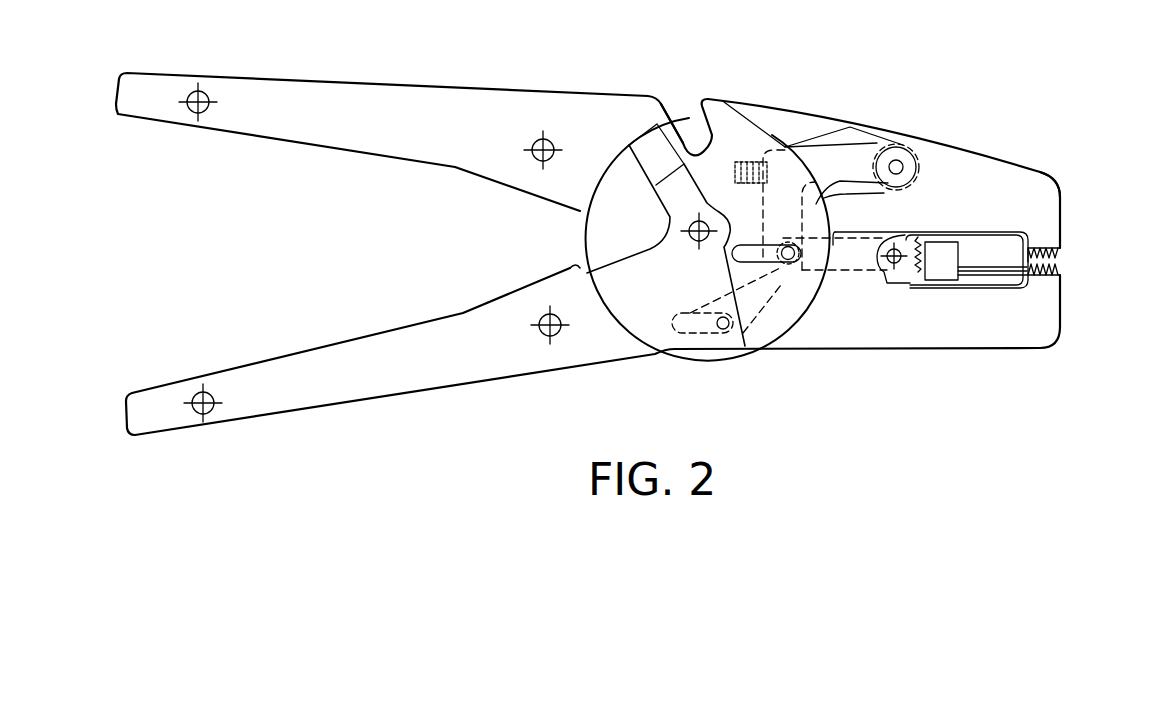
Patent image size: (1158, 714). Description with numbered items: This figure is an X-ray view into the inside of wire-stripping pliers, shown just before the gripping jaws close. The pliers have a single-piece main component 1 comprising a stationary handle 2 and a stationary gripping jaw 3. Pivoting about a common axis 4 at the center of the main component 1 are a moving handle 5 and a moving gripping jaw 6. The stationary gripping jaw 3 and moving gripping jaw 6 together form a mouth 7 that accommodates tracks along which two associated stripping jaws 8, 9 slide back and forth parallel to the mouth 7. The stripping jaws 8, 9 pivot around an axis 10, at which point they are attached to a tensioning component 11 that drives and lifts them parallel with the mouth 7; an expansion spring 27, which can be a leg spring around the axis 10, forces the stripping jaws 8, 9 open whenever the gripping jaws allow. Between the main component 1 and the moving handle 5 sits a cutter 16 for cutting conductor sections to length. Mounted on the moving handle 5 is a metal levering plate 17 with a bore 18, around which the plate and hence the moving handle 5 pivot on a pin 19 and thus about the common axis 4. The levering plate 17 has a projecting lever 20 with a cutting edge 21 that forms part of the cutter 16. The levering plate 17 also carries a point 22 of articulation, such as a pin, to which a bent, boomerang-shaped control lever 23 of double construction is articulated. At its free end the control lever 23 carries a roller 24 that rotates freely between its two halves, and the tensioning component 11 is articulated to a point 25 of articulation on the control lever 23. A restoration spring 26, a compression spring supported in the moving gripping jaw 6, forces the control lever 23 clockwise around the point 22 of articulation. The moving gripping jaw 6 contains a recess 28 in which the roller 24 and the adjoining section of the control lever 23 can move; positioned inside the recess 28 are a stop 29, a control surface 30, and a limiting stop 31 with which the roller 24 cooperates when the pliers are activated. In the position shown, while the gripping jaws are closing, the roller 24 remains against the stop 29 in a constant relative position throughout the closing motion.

The main component 1 is at (496, 85).
The stationary handle 2 is at (330, 100).
The stationary gripping jaw 3 is at (968, 333).
The common axis 4 is at (695, 243).
The moving handle 5 is at (381, 375).
The moving gripping jaw 6 is at (1027, 188).
The mouth 7 is at (1061, 259).
The stripping jaw 8 is at (973, 238).
The stripping jaw 9 is at (976, 280).
The axis 10 is at (892, 263).
The tensioning component 11 is at (848, 258).
The cutter 16 is at (688, 123).
The levering plate 17 is at (643, 318).
The bore 18 is at (672, 224).
The pin 19 is at (706, 245).
The projecting lever 20 is at (640, 142).
The cutting edge 21 is at (660, 122).
The point of articulation 22 is at (730, 337).
The control lever 23 is at (785, 147).
The roller 24 is at (898, 144).
The point of articulation 25 is at (784, 266).
The restoration spring 26 is at (748, 162).
The expansion spring 27 is at (928, 273).
The recess 28 is at (848, 126).
The stop 29 is at (888, 190).
The control surface 30 is at (857, 182).
The limiting stop 31 is at (823, 195).